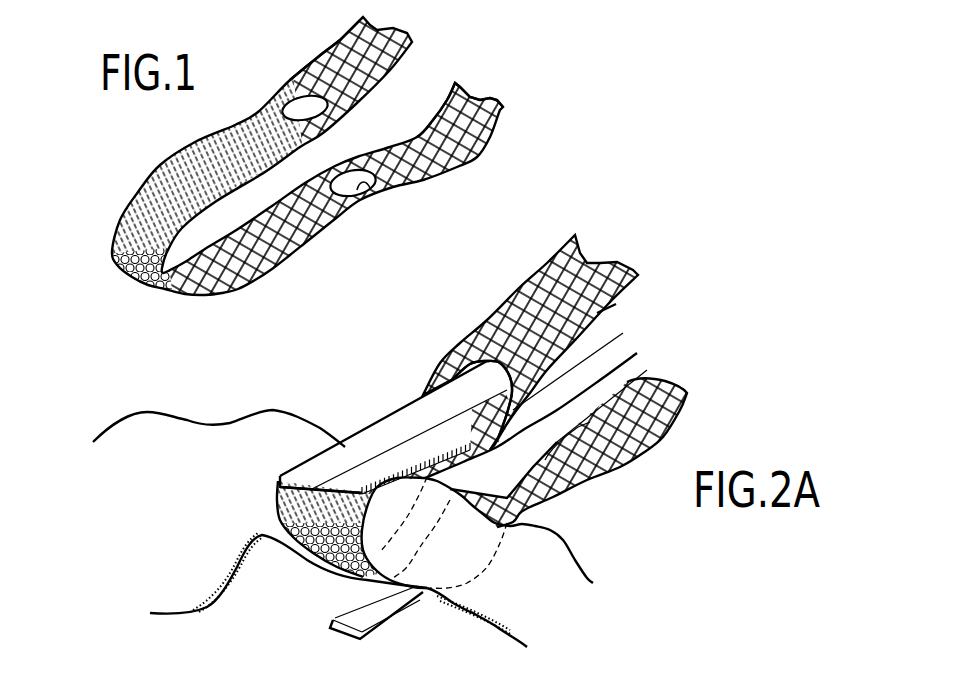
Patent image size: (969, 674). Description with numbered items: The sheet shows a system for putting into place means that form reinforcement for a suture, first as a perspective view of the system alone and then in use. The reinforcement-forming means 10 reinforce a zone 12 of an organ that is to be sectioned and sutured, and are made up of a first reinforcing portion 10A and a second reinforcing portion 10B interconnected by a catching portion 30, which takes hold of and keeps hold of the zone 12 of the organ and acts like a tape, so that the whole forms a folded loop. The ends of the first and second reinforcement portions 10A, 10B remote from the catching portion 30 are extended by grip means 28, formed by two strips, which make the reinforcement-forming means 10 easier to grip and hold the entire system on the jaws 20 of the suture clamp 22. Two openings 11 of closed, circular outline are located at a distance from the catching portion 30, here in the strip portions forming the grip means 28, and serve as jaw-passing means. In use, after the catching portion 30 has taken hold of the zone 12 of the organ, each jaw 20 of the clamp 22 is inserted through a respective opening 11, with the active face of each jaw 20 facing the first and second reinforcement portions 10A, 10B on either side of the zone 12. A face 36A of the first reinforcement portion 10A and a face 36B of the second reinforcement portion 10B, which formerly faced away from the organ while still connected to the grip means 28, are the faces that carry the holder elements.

In FIG. 1, the reinforcement-forming means 10 is at (291, 169).
In FIG. 1, the first reinforcing portion 10A is at (147, 178).
In FIG. 2A, the first reinforcing portion 10A is at (278, 487).
In FIG. 1, the second reinforcing portion 10B is at (138, 278).
In FIG. 2A, the second reinforcing portion 10B is at (313, 556).
In FIG. 1, the opening 11 is at (305, 105).
In FIG. 2A, the opening 11 is at (457, 367).
In FIG. 2A, the zone 12 is at (483, 600).
In FIG. 2A, the jaw 20 is at (413, 417).
In FIG. 2A, the suture clamp 22 is at (626, 329).
In FIG. 1, the grip means 28 is at (317, 49).
In FIG. 2A, the grip means 28 is at (517, 285).
In FIG. 1, the catching portion 30 is at (268, 169).
In FIG. 2A, the catching portion 30 is at (296, 492).
In FIG. 2A, the face of the first reinforcement portion 36A is at (363, 490).
In FIG. 2A, the face of the second reinforcement portion 36B is at (329, 581).